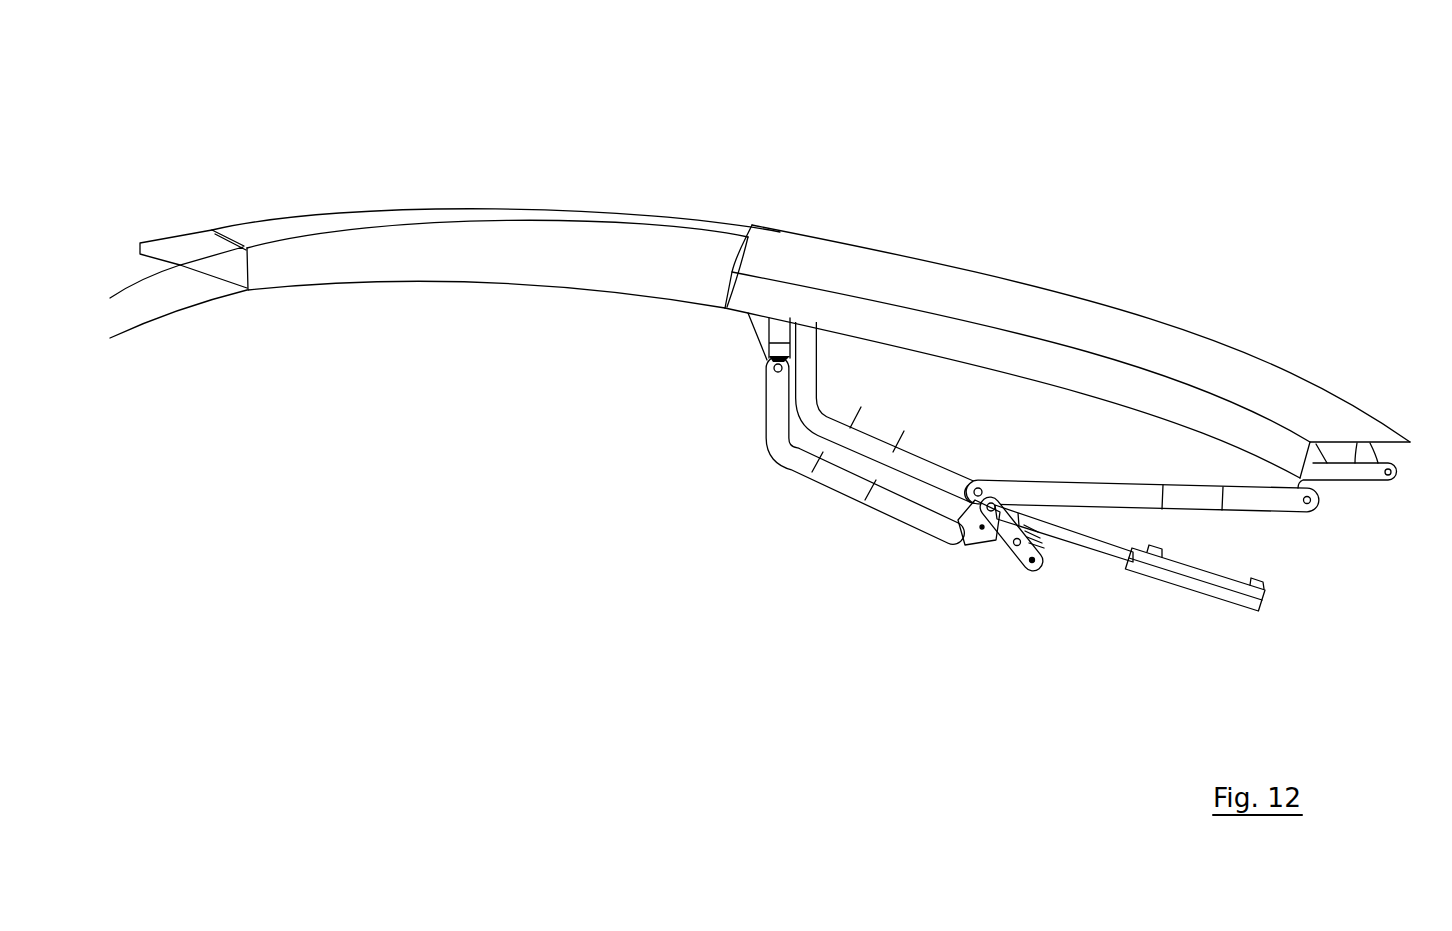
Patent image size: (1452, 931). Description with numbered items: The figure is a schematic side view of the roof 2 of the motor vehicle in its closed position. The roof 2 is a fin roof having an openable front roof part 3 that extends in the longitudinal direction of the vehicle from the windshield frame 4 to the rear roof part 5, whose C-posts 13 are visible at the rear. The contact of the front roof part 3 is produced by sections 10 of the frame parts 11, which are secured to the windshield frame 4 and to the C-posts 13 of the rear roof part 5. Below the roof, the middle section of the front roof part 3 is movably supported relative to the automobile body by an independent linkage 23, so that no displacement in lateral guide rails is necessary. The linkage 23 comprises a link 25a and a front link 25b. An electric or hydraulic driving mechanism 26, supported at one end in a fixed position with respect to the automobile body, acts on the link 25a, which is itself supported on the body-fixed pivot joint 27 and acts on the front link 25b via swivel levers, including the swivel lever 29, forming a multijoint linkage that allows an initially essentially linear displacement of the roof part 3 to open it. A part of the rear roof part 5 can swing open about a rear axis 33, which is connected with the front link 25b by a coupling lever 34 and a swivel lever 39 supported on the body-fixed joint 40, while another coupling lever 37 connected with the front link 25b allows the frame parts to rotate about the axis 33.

The roof 2 is at (726, 128).
The front roof part 3 is at (408, 200).
The windshield frame 4 is at (170, 230).
The rear roof part 5 is at (1100, 278).
The sections of frame parts 10 is at (470, 255).
The frame parts 11 is at (860, 233).
The C-posts 13 is at (965, 345).
The linkage 23 is at (763, 499).
The link 25a is at (877, 428).
The front link 25b is at (753, 425).
The driving mechanism 26 is at (1193, 576).
The pivot joint 27 is at (1033, 560).
The swivel lever 29 is at (983, 530).
The rear axis 33 is at (1393, 468).
The coupling lever 34 is at (1207, 498).
The coupling lever 37 is at (781, 336).
The swivel lever 39 is at (1340, 474).
The joint 40 is at (1313, 468).